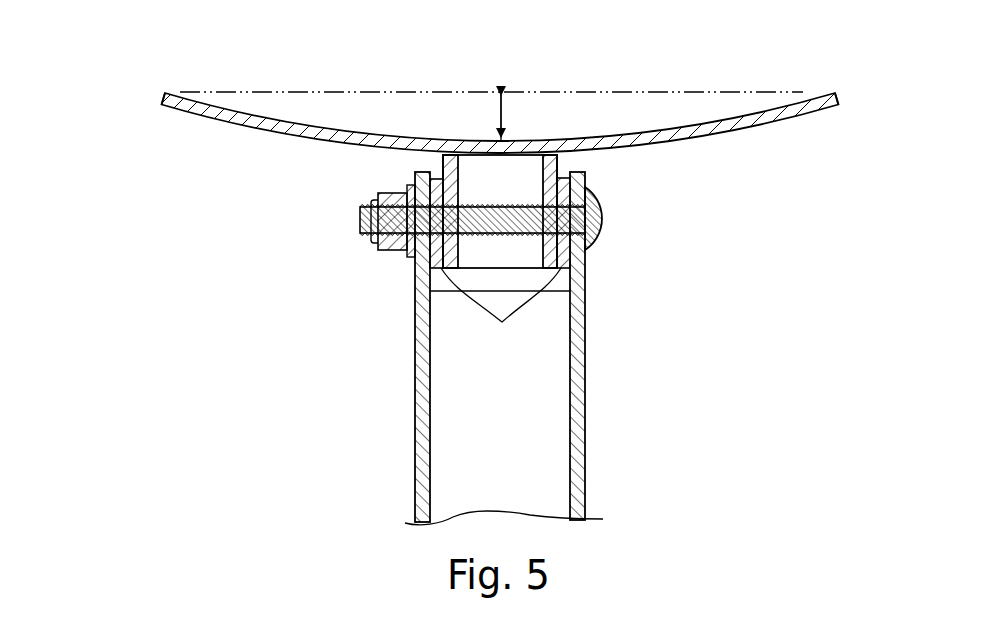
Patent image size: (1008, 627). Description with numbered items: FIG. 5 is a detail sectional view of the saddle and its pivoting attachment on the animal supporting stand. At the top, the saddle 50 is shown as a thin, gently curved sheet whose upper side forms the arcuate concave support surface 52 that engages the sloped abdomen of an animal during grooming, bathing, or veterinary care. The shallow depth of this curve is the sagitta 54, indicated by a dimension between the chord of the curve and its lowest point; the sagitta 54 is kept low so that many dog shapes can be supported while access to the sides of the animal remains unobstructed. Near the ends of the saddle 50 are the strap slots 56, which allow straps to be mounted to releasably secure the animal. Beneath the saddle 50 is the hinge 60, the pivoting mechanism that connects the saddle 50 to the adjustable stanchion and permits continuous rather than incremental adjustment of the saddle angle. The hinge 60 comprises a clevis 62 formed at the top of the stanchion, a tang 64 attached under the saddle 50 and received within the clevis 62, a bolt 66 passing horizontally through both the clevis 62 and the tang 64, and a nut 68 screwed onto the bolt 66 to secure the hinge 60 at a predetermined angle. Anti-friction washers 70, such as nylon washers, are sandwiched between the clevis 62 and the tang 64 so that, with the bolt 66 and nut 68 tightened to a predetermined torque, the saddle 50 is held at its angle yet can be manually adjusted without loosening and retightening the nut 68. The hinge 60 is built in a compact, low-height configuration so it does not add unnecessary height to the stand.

The saddle 50 is at (170, 93).
The support surface 52 is at (608, 137).
The sagitta 54 is at (501, 120).
The strap slots 56 is at (805, 98).
The hinge 60 is at (268, 312).
The clevis 62 is at (415, 285).
The tang 64 is at (509, 265).
The bolt 66 is at (600, 225).
The nut 68 is at (390, 251).
The anti-friction washers 70 is at (501, 310).